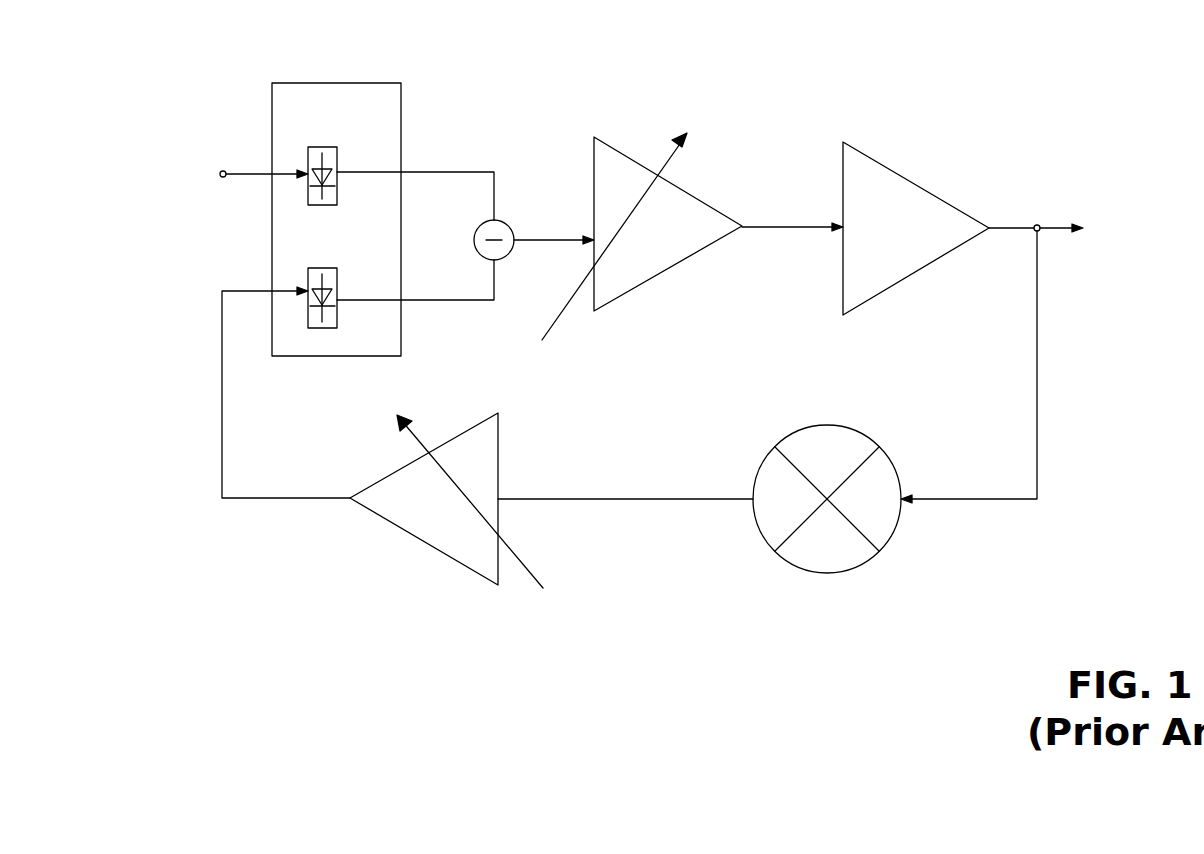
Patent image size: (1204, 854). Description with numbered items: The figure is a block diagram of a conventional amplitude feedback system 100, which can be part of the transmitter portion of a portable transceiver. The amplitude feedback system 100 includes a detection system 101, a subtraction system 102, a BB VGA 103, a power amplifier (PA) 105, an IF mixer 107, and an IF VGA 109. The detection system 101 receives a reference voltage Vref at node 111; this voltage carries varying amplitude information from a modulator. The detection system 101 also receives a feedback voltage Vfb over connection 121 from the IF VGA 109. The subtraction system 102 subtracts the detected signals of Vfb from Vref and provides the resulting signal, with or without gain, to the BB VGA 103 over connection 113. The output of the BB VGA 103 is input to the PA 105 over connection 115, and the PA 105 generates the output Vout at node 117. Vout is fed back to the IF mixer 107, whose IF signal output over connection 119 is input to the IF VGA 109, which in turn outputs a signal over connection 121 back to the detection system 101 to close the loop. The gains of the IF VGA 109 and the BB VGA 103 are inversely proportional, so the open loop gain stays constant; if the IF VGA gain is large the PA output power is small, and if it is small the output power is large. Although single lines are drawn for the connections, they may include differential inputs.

The amplitude feedback system 100 is at (1041, 95).
The detection system 101 is at (381, 132).
The subtraction system 102 is at (482, 222).
The BB VGA 103 is at (662, 247).
The power amplifier (PA) 105 is at (869, 245).
The IF mixer 107 is at (885, 528).
The IF VGA 109 is at (403, 520).
The node 111 is at (223, 171).
The connection 113 is at (553, 240).
The connection 115 is at (816, 227).
The node 117 is at (1037, 226).
The connection 119 is at (614, 499).
The connection 121 is at (245, 498).